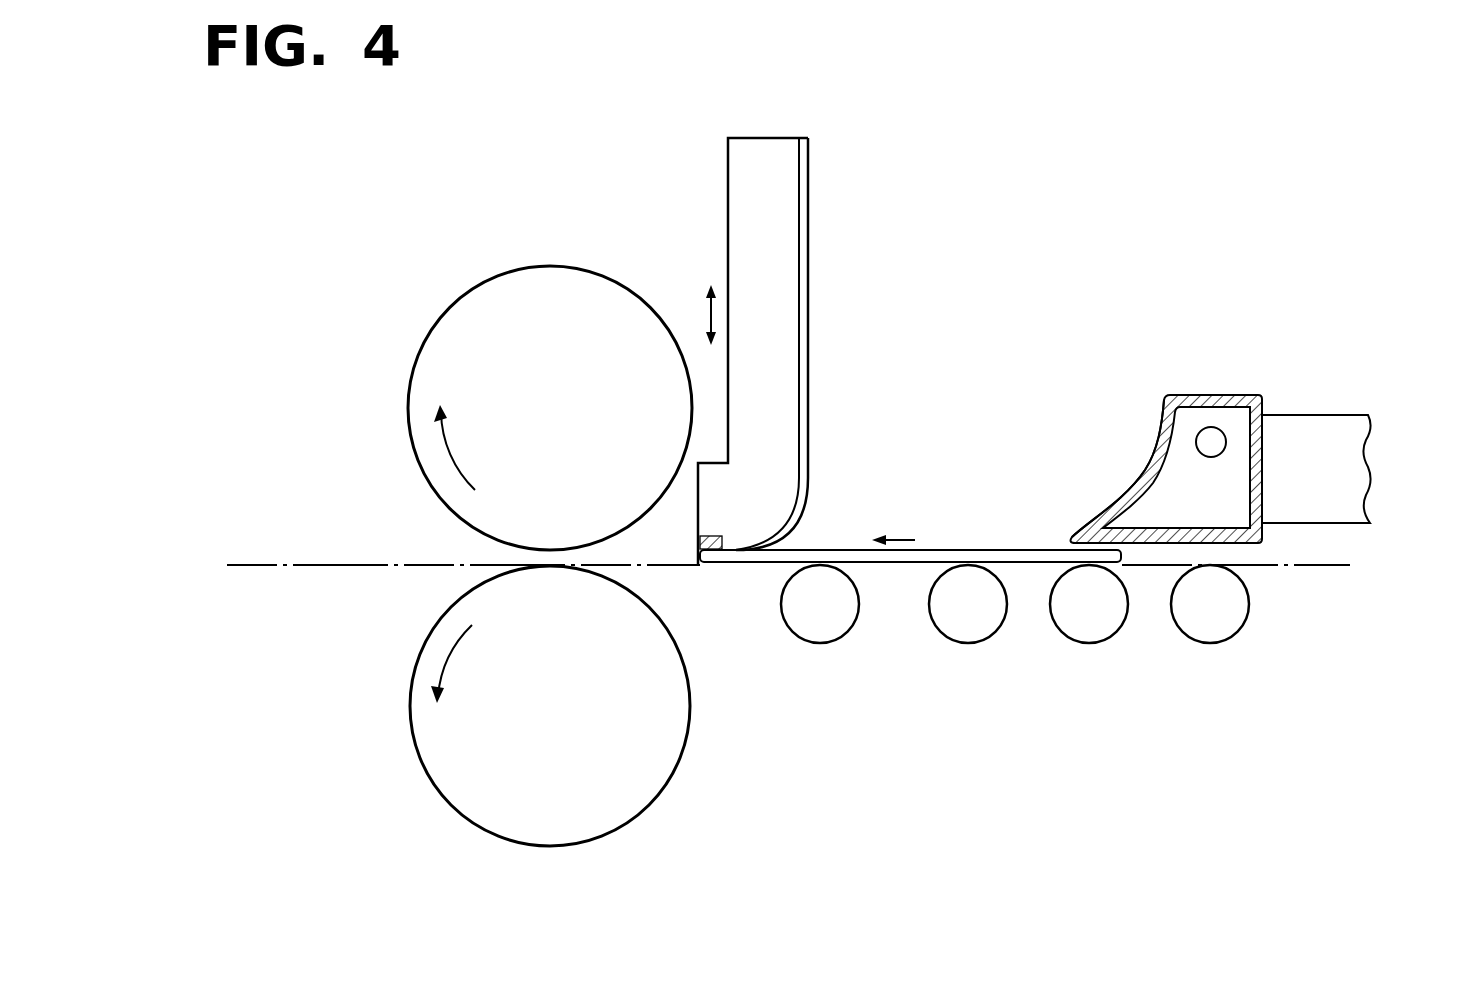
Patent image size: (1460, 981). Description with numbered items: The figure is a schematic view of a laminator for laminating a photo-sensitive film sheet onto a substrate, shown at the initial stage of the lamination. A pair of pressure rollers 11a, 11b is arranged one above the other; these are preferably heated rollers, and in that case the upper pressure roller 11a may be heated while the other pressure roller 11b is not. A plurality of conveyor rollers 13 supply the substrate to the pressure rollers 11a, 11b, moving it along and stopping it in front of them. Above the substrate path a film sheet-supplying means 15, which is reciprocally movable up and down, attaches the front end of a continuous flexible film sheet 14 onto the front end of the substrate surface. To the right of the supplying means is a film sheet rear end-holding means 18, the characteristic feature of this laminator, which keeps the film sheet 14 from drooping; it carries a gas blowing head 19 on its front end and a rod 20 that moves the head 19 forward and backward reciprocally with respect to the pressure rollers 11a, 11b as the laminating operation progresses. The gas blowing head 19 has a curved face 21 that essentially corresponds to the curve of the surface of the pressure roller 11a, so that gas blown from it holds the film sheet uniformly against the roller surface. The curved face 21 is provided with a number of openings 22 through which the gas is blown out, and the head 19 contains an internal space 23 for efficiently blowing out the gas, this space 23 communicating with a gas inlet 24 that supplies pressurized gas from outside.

The pressure roller 11a is at (412, 373).
The pressure roller 11b is at (415, 758).
The conveyor rollers 13 is at (833, 642).
The continuous flexible film sheet 14 is at (808, 181).
The film sheet-supplying means 15 is at (727, 183).
The film sheet rear end-holding means 18 is at (1245, 462).
The gas blowing head 19 is at (1215, 405).
The support arm 20 is at (1325, 523).
The curved face 21 is at (1158, 433).
The openings 22 is at (1137, 488).
The space 23 is at (1237, 420).
The gas inlet 24 is at (1212, 427).